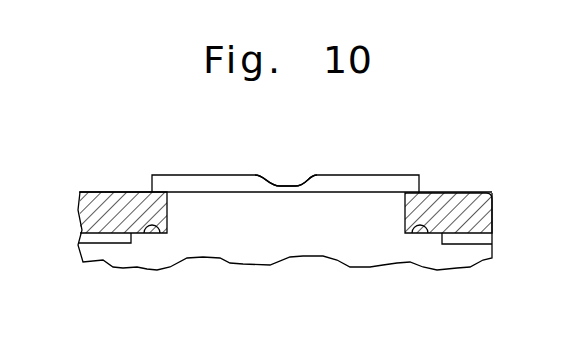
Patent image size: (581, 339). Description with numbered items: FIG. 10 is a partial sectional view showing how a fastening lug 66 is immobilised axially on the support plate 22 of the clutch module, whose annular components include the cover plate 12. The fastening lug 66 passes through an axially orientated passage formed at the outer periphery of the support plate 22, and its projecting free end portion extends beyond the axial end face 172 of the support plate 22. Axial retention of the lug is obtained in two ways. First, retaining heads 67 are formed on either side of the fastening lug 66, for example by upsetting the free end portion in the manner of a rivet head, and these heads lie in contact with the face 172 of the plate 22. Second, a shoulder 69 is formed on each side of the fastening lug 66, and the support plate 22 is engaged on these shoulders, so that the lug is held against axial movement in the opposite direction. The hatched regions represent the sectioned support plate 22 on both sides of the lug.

The cover plate 12 is at (494, 248).
The support plate 22 is at (480, 191).
The axial end face 172 is at (438, 197).
The retaining head 67 is at (202, 183).
The fastening lug 66 is at (340, 174).
The shoulder 69 is at (158, 233).